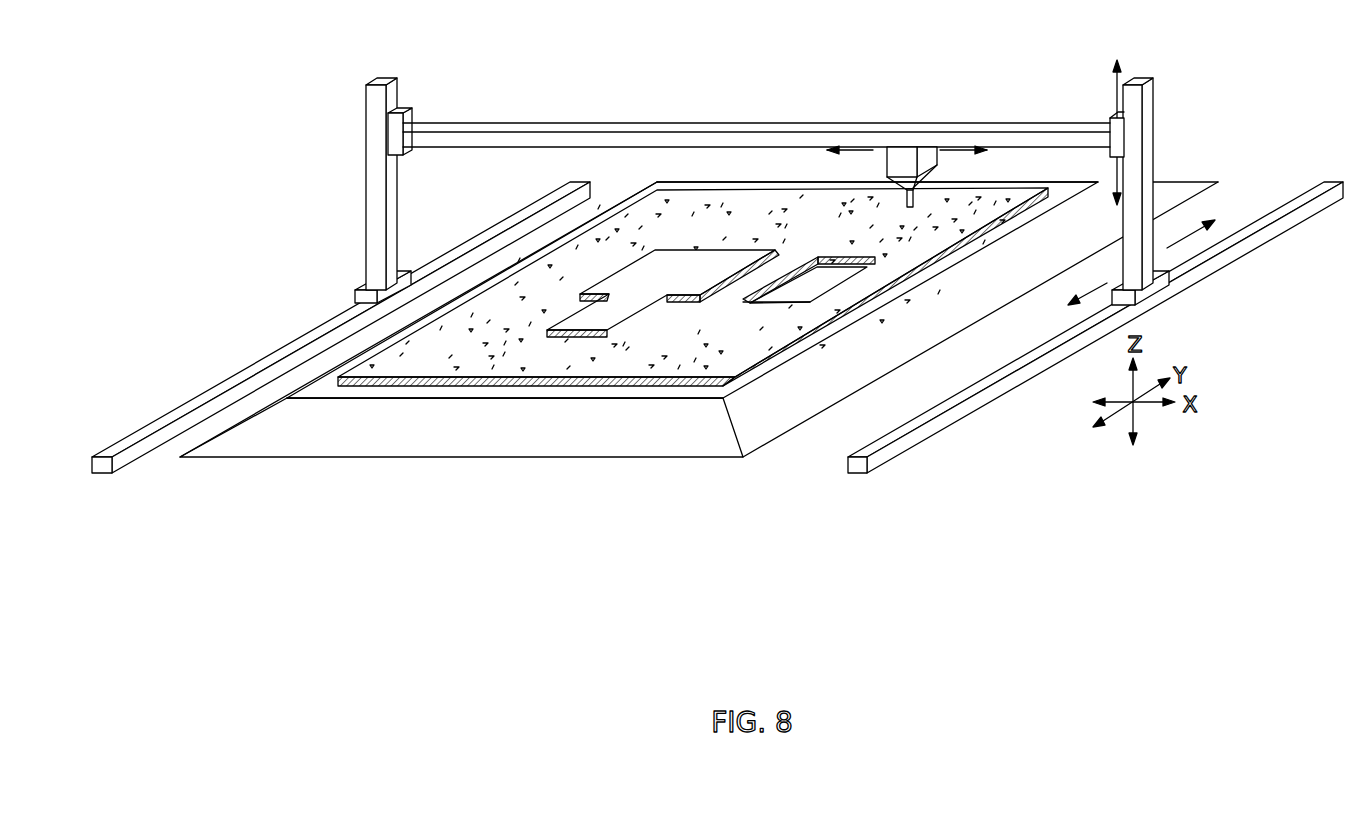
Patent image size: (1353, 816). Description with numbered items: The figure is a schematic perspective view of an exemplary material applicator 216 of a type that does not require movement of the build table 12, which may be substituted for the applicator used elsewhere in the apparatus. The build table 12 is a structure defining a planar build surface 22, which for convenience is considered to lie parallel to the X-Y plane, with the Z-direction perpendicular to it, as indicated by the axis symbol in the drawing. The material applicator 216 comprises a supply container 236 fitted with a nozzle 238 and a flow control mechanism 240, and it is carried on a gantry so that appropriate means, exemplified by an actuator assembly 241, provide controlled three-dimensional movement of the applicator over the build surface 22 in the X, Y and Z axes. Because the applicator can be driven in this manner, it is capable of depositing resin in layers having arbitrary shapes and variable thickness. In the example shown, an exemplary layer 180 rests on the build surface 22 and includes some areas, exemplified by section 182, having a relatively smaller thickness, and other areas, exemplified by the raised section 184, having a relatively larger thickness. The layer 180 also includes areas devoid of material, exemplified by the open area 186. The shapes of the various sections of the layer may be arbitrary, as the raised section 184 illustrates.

The build table 12 is at (345, 447).
The build surface 22 is at (318, 390).
The layer 180 is at (514, 304).
The section 182 is at (683, 353).
The raised section 184 is at (648, 283).
The open area 186 is at (797, 290).
The material applicator 216 is at (937, 111).
The supply container 236 is at (905, 145).
The nozzle 238 is at (903, 202).
The flow control mechanism 240 is at (923, 180).
The actuator assembly 241 is at (1186, 121).